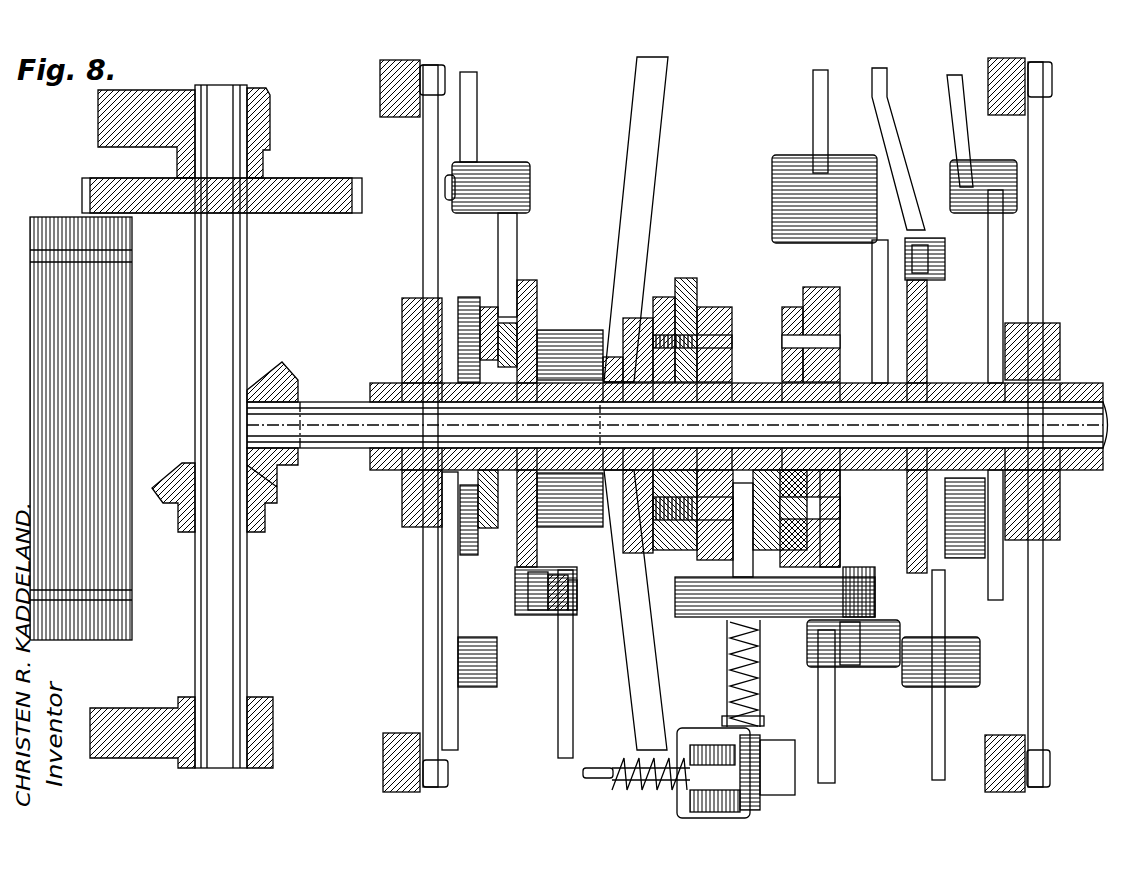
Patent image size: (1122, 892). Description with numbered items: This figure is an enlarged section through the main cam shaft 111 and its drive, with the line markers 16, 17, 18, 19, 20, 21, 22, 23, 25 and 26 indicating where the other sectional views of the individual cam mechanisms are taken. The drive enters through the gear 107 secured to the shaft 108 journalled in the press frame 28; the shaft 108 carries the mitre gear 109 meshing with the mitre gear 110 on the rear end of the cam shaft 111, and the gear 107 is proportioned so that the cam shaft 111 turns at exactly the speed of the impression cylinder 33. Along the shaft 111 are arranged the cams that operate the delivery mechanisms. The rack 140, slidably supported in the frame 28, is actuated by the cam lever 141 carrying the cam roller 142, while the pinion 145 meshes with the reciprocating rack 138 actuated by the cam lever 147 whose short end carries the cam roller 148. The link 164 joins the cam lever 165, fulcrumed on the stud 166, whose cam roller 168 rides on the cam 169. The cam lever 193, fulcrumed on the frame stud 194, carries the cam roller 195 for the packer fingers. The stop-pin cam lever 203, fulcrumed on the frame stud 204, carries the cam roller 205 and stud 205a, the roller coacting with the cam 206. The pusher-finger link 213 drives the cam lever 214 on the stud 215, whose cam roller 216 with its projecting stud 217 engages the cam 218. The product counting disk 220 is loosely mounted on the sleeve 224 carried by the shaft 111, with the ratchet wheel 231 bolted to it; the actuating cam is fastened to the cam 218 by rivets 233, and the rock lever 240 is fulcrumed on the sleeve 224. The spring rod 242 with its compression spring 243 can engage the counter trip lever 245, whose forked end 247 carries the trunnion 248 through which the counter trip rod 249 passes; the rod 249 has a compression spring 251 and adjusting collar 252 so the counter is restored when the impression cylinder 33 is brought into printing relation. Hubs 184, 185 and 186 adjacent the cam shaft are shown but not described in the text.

The press frame 28 is at (157, 95).
The gear 107 is at (325, 178).
The shaft 108 is at (247, 311).
The impression cylinder 33 is at (133, 363).
The mitre gear 109 is at (178, 466).
The mitre gear 110 is at (285, 367).
The main cam shaft 111 is at (355, 402).
The cam roller 142 is at (395, 410).
The pinion 145 is at (402, 318).
The reciprocating rack 140 is at (399, 117).
The cam lever 141 is at (423, 203).
The shifter rod 185 is at (477, 92).
The shifter hub 184 is at (530, 186).
The cam 169 is at (536, 298).
The gear 186 is at (472, 556).
The stud 166 is at (522, 590).
The cam roller 168 is at (527, 614).
The cam lever 165 is at (548, 613).
The link 164 is at (887, 90).
The cam lever 203 is at (655, 130).
The frame stud 204 is at (585, 540).
The cam 206 is at (614, 355).
The product counting disk 220 is at (645, 318).
The ratchet wheel 231 is at (718, 305).
The cam roller 205 is at (660, 421).
The stud 205a is at (668, 448).
The rivets 233 is at (782, 342).
The sleeve 224 is at (769, 425).
The cam roller 148 is at (1045, 432).
The reciprocating rack 138 is at (988, 66).
The cam lever 147 is at (1043, 166).
The cam lever 193 is at (958, 141).
The frame stud 194 is at (1005, 170).
The cam roller 195 is at (958, 476).
The projecting stud 217 is at (700, 593).
The stud 215 is at (875, 598).
The cam roller 216 is at (810, 628).
The cam lever 214 is at (845, 667).
The link 213 is at (835, 722).
The cam 218 is at (838, 527).
The rock lever 240 is at (745, 523).
The adjusting collar 252 is at (796, 541).
The spring rod 242 is at (731, 668).
The compression spring 243 is at (728, 690).
The forked end 247 is at (722, 720).
The trunnion 248 is at (680, 738).
The counter trip lever 245 is at (797, 765).
The counter trip rod 249 is at (585, 773).
The compression spring 251 is at (651, 789).
The section line 16 is at (381, 807).
The section line 17 is at (986, 807).
The section line 18 is at (518, 752).
The section line 19 is at (462, 820).
The section line 20 is at (971, 727).
The section line 21 is at (597, 745).
The section line 22 is at (816, 807).
The section line 23 is at (597, 822).
The section line 25 is at (708, 642).
The section line 26 is at (810, 728).